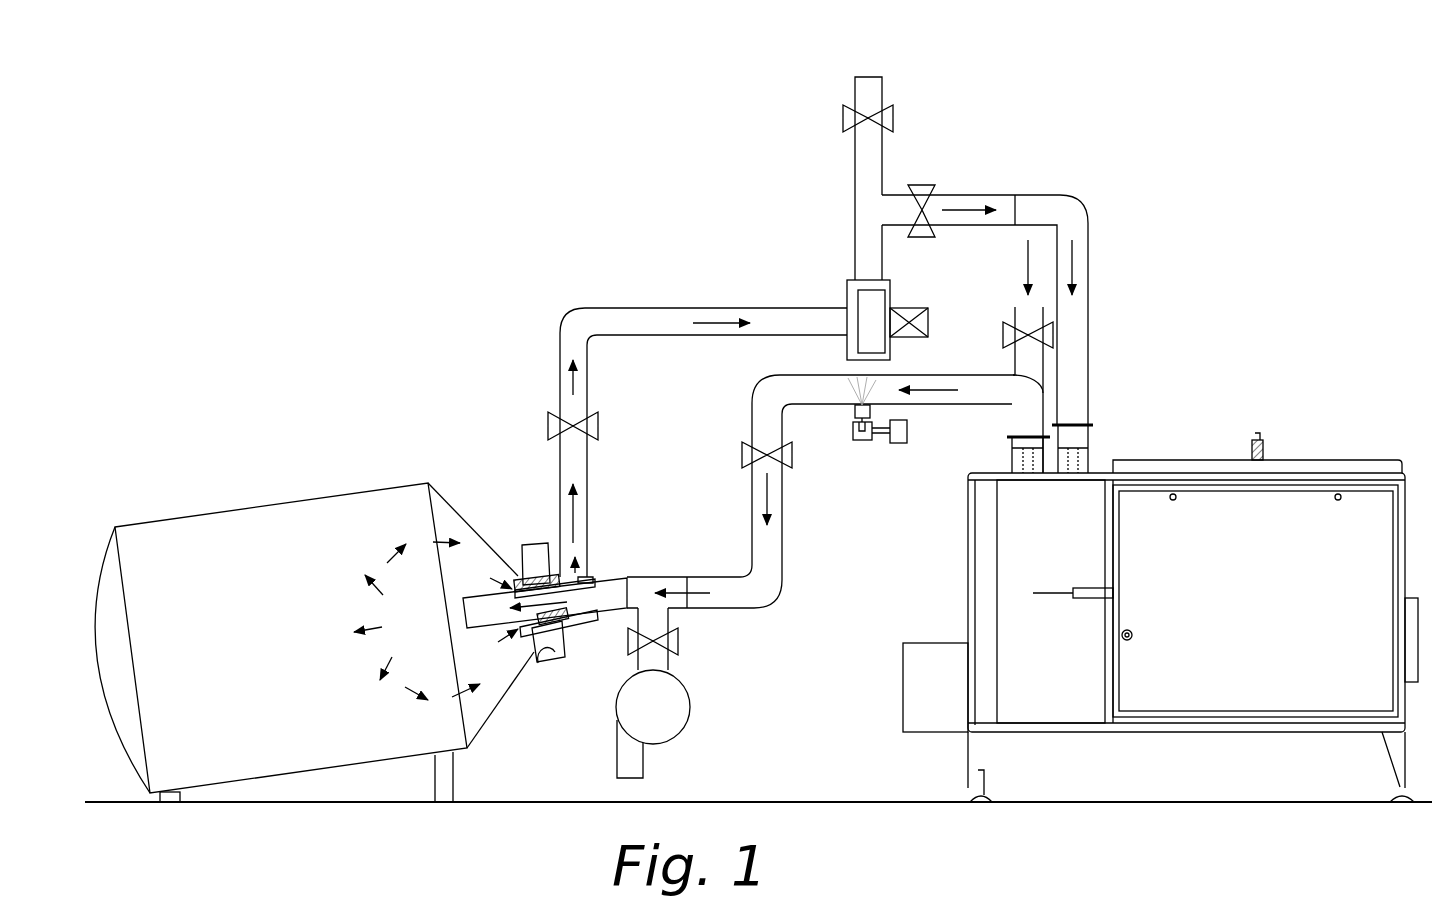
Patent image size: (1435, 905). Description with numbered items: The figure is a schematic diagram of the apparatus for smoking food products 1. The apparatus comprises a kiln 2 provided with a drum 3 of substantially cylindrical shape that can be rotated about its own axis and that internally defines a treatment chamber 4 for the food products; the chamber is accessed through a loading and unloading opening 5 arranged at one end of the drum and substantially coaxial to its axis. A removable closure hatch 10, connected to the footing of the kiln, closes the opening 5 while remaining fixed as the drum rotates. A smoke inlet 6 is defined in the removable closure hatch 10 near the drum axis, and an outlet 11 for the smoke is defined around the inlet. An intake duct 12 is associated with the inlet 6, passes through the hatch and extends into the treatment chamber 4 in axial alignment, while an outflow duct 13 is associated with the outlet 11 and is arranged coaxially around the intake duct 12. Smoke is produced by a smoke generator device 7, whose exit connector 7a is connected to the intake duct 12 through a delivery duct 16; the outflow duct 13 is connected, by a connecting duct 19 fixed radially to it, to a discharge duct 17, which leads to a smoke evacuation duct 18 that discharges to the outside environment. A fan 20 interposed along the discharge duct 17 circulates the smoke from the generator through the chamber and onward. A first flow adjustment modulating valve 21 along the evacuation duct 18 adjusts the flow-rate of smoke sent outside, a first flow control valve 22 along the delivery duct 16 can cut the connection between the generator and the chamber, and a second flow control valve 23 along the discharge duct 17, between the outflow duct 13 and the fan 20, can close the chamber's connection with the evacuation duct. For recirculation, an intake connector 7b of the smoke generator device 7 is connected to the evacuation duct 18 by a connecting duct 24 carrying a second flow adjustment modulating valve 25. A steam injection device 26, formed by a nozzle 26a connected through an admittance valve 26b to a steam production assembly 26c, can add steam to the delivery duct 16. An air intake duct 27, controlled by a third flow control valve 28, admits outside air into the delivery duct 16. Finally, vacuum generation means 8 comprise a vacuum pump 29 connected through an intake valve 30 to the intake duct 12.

The apparatus for smoking food products 1 is at (1262, 242).
The kiln 2 is at (210, 496).
The drum 3 is at (272, 505).
The treatment chamber 4 is at (320, 713).
The loading and unloading opening 5 is at (538, 652).
The smoke inlet 6 is at (547, 614).
The smoke generator device 7 is at (1333, 456).
The exit connector 7a is at (1010, 462).
The intake connector 7b is at (1088, 437).
The vacuum generation means 8 is at (700, 713).
The removable closure hatch 10 is at (537, 560).
The outlet 11 is at (523, 565).
The intake duct 12 is at (605, 578).
The outflow duct 13 is at (587, 622).
The delivery duct 16 is at (810, 405).
The discharge duct 17 is at (637, 308).
The smoke evacuation duct 18 is at (855, 152).
The connecting duct 19 is at (580, 548).
The fan 20 is at (873, 300).
The first flow adjustment modulating valve 21 is at (843, 118).
The first flow control valve 22 is at (742, 455).
The second flow control valve 23 is at (548, 422).
The connecting duct 24 is at (1088, 323).
The second flow adjustment modulating valve 25 is at (922, 188).
The steam injection device 26 is at (888, 458).
The nozzle 26a is at (855, 405).
The admittance valve 26b is at (863, 440).
The steam production assembly 26c is at (907, 430).
The air intake duct 27 is at (1043, 368).
The third flow control valve 28 is at (1003, 333).
The vacuum pump 29 is at (683, 735).
The intake valve 30 is at (670, 642).